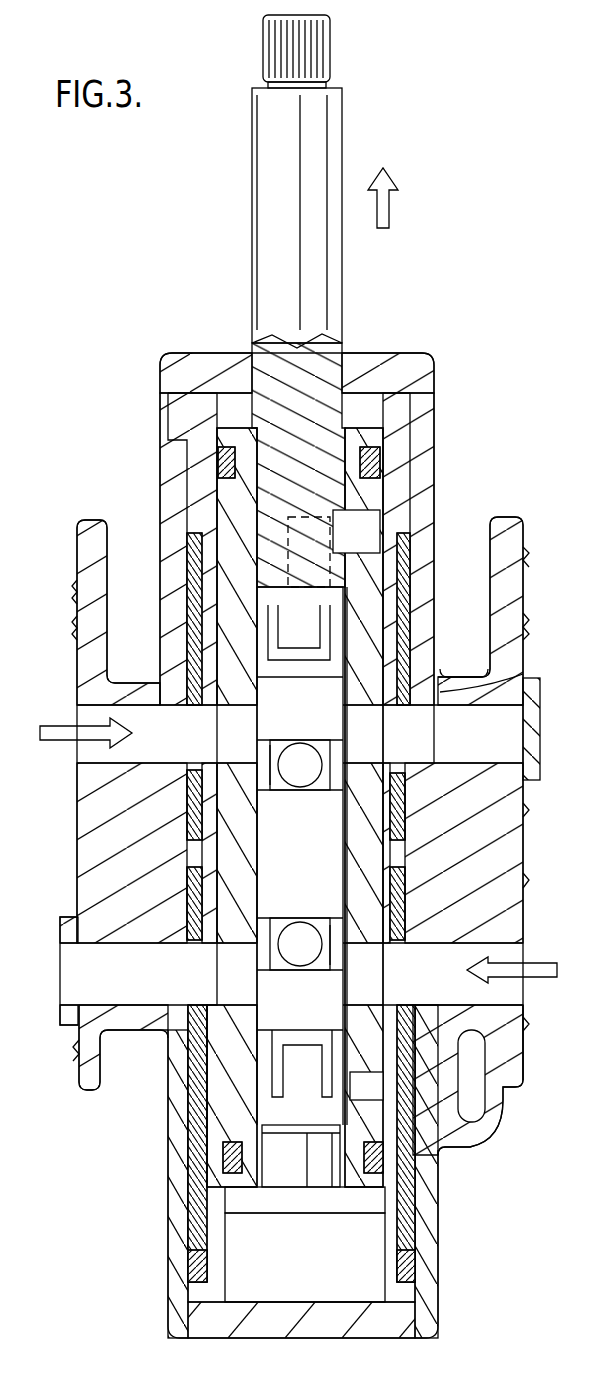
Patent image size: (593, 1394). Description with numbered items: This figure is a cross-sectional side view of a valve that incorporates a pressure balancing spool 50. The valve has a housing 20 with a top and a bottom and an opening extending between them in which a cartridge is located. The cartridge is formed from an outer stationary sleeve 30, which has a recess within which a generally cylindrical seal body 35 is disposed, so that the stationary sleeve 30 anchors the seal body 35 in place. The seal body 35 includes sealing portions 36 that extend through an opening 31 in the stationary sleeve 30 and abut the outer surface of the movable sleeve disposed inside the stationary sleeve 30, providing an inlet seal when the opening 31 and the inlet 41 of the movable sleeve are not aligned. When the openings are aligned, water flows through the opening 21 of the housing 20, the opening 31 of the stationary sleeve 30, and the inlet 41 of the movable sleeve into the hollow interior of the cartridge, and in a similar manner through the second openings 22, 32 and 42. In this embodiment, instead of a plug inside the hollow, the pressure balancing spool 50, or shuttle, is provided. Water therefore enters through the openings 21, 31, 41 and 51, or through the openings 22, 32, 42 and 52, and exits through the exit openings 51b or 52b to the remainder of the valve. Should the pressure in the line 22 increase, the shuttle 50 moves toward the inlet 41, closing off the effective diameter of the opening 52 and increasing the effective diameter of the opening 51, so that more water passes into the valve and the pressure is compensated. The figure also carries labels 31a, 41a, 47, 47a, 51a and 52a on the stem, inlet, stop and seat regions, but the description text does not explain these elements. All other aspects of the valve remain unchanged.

The housing 20 is at (77, 521).
The opening of the housing 21 is at (478, 752).
The opening of the housing 22 is at (462, 994).
The outer stationary sleeve 30 is at (402, 437).
The opening through the stationary sleeve 31 is at (263, 233).
The knob 31a is at (322, 58).
The opening of the stationary sleeve 32 is at (397, 962).
The cylindrical seal body 35 is at (436, 577).
The sealing portions 36 is at (523, 674).
The inlet of the movable sleeve 41 is at (373, 750).
The first inlet 41a is at (228, 729).
The opening of the movable sleeve 42 is at (377, 990).
The stop member 47 is at (405, 575).
The lower cup 47a is at (378, 1087).
The pressure balancing spool 50 is at (322, 867).
The opening 51 is at (342, 793).
The first valve seat 51a is at (262, 776).
The exit opening 51b is at (300, 750).
The opening 52 is at (342, 970).
The second valve seat 52a is at (262, 952).
The exit opening 52b is at (300, 937).